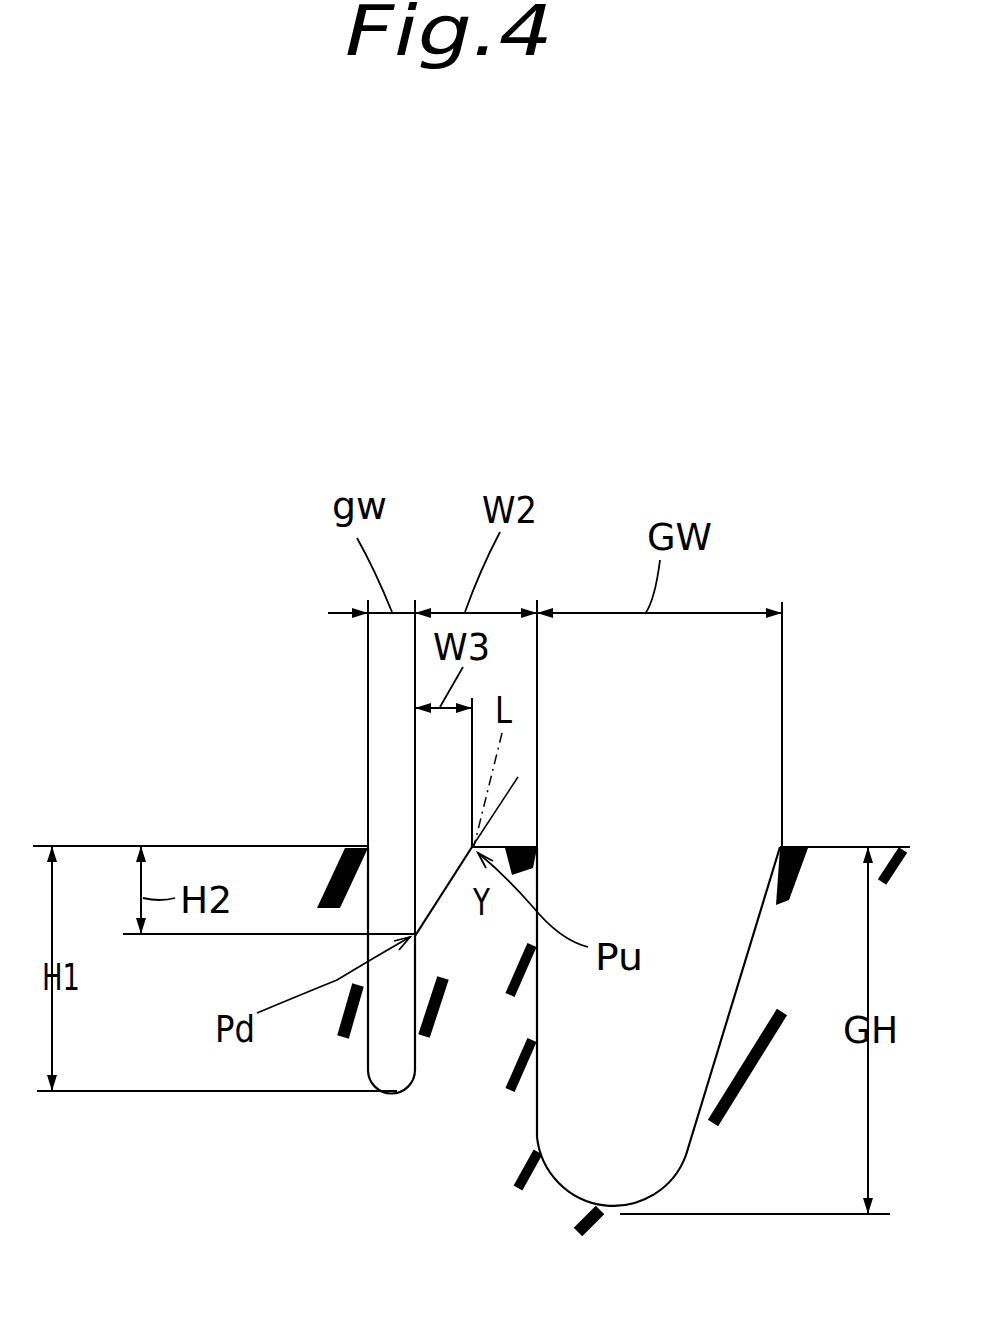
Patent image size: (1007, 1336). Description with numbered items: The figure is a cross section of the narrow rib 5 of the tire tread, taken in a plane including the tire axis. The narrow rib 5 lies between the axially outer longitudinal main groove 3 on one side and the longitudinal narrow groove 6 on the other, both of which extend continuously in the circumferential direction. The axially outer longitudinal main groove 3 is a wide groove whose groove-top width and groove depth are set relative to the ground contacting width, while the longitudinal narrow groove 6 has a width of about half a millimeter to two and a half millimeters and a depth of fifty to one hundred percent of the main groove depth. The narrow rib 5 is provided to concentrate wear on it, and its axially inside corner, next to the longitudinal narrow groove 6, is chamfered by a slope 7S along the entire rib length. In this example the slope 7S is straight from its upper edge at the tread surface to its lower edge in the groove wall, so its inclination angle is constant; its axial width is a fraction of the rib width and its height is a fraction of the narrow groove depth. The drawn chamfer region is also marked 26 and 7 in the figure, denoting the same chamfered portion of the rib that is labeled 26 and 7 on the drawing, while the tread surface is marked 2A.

The tread surface 2A is at (508, 848).
The axially outer longitudinal main groove 3 is at (643, 1141).
The narrow rib 5 is at (494, 1017).
The longitudinal narrow groove 6 is at (388, 1068).
The chamfered portion 7 is at (446, 853).
The chamfered surface 26 is at (338, 838).
The slope 7S is at (443, 887).